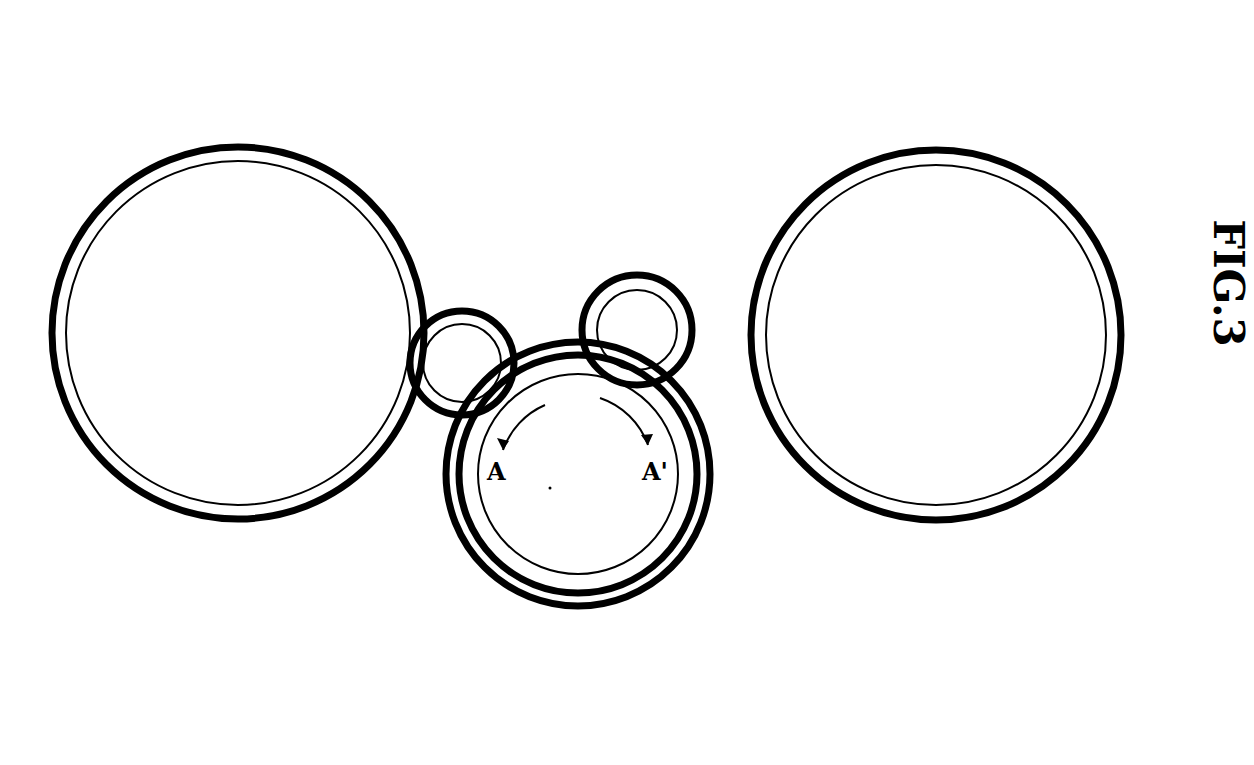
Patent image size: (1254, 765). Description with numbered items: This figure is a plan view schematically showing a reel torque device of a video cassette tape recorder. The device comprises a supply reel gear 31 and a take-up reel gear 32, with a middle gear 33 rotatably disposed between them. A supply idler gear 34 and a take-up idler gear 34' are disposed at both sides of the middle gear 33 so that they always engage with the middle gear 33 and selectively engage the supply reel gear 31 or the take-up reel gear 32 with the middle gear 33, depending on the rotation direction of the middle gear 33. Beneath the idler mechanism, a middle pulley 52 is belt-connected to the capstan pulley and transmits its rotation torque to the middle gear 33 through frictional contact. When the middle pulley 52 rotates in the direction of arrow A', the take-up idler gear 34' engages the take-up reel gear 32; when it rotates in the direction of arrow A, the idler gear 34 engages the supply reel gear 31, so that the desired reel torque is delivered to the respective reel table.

The supply reel gear 31 is at (225, 150).
The take-up reel gear 32 is at (920, 168).
The middle gear 33 is at (657, 535).
The supply idler gear 34 is at (462, 324).
The take-up idler gear 34' is at (637, 295).
The middle pulley 52 is at (620, 607).